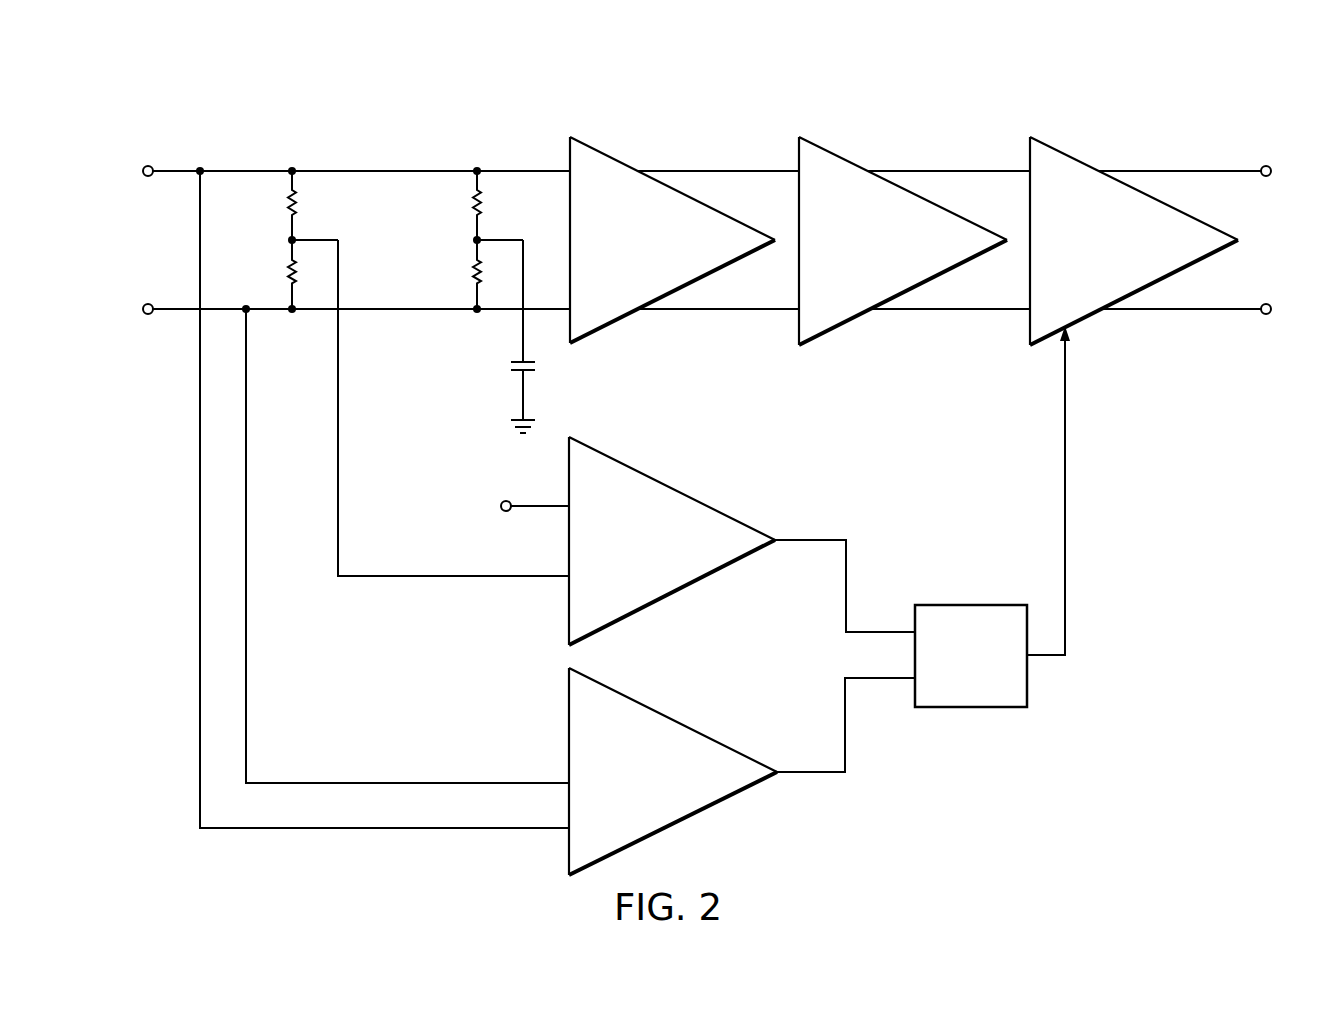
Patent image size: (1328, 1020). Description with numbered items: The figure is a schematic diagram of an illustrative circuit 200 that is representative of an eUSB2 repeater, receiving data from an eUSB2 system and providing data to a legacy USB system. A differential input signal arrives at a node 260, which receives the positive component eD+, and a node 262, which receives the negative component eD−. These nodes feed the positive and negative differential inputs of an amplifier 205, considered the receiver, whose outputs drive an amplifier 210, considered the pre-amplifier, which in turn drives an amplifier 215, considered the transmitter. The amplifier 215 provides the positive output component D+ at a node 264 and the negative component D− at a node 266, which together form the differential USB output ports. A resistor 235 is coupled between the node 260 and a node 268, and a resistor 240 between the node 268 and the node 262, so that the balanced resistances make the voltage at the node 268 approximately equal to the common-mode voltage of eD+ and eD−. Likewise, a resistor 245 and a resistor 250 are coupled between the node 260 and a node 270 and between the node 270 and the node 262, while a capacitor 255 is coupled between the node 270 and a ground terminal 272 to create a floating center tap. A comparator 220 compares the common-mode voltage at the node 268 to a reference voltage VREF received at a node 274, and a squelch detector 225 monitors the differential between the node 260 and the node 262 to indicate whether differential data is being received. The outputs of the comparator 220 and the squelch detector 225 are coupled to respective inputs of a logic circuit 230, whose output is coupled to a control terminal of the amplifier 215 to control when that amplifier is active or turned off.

The circuit 200 is at (526, 62).
The amplifier 205 is at (627, 132).
The amplifier 210 is at (832, 150).
The amplifier 215 is at (1062, 150).
The comparator 220 is at (677, 592).
The squelch detector 225 is at (676, 823).
The logic circuit 230 is at (972, 708).
The resistor 235 is at (288, 204).
The resistor 240 is at (288, 272).
The resistor 245 is at (473, 204).
The resistor 250 is at (473, 272).
The capacitor 255 is at (510, 366).
The node 260 is at (148, 166).
The node 262 is at (148, 304).
The node 264 is at (1266, 166).
The node 266 is at (1266, 304).
The node 268 is at (297, 238).
The node 270 is at (482, 238).
The ground terminal 272 is at (511, 427).
The node 274 is at (505, 512).